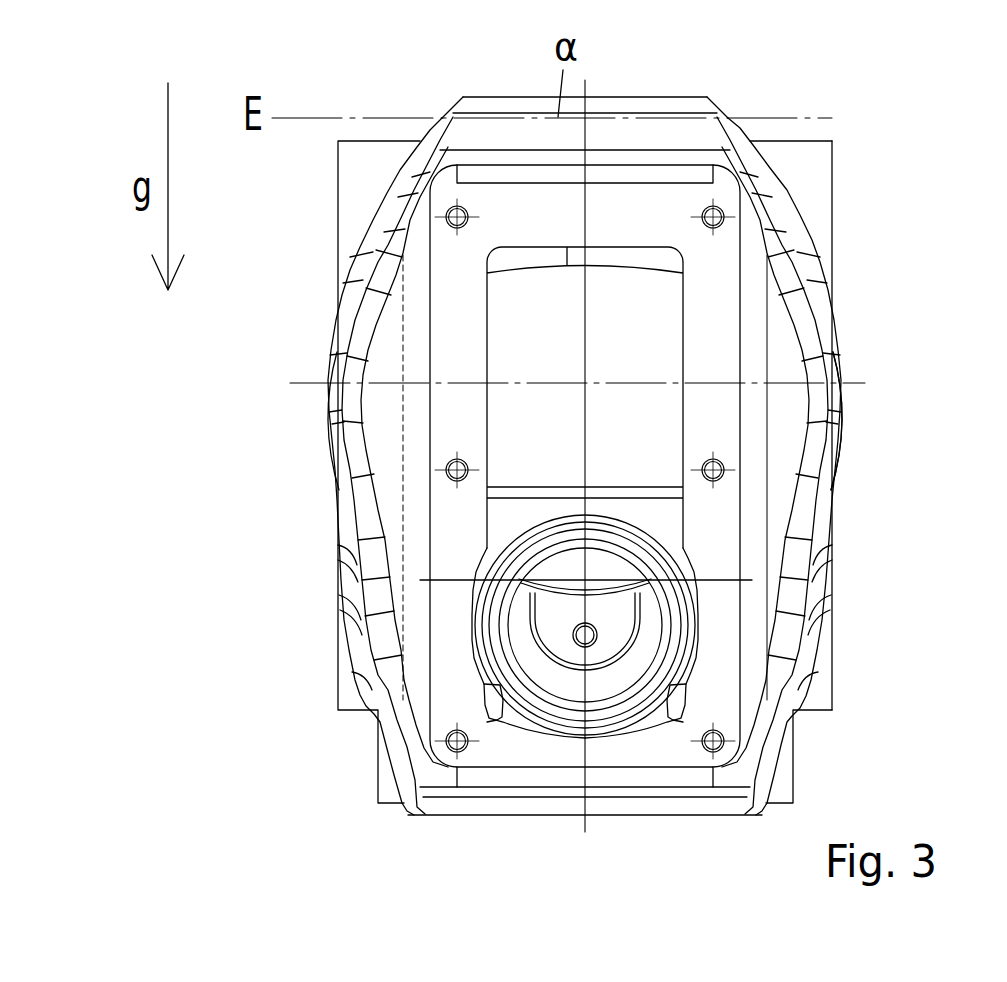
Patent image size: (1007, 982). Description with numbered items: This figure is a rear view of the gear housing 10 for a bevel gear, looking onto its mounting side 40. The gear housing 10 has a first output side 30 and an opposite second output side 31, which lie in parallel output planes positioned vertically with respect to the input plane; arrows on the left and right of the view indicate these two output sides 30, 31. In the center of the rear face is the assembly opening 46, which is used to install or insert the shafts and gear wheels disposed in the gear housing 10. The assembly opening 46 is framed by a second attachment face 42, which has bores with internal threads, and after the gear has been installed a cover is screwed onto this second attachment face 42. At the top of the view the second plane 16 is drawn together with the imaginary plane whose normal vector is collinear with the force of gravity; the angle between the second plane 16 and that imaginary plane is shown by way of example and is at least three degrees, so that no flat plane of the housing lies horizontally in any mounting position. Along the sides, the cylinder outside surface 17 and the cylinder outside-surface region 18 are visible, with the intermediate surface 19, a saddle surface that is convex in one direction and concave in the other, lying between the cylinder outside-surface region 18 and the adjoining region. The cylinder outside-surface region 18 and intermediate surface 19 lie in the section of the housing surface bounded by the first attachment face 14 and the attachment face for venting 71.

The gear housing 10 is at (280, 467).
The first attachment face 14 is at (832, 247).
The second plane 16 is at (533, 117).
The cylinder outside surface 17 is at (838, 372).
The cylinder outside-surface region 18 is at (805, 167).
The intermediate surface 19 is at (797, 217).
The first output side 30 is at (885, 407).
The second output side 31 is at (248, 393).
The mounting side 40 is at (565, 831).
The second attachment face 42 is at (718, 645).
The assembly opening 46 is at (623, 335).
The attachment face for venting 71 is at (638, 97).